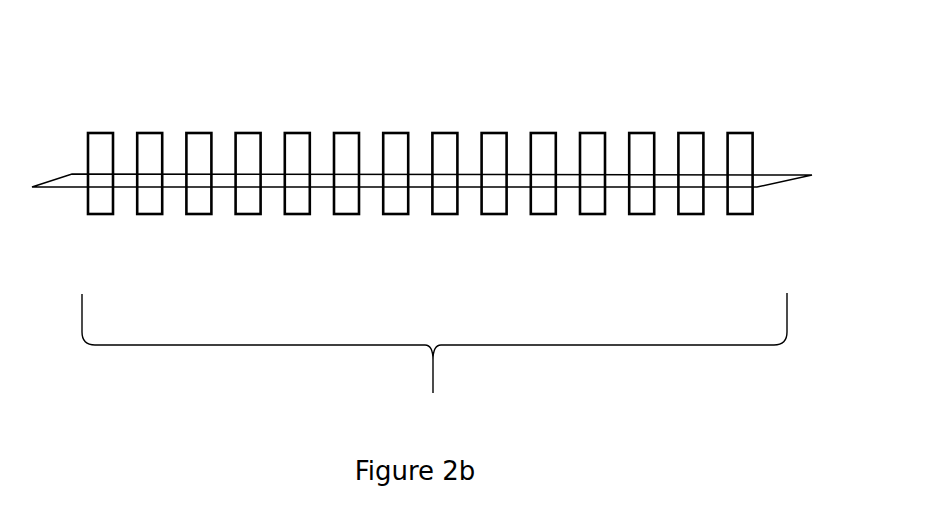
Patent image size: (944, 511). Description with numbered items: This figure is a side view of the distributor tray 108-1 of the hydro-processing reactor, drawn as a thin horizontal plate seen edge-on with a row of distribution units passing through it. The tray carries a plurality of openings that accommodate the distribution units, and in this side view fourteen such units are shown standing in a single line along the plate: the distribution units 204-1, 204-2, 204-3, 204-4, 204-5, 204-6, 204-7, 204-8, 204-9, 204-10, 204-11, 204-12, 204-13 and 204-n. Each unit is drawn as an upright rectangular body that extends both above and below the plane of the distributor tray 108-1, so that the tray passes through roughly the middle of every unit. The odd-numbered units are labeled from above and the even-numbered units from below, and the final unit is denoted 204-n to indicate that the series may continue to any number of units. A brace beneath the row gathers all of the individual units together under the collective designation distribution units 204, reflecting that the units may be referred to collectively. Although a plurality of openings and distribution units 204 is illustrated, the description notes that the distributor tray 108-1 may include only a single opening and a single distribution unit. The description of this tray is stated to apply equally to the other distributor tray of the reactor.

The distributor tray 108-1 is at (801, 173).
The distribution units 204 is at (434, 359).
The distribution unit 204-1 is at (101, 132).
The distribution unit 204-2 is at (152, 216).
The distribution unit 204-3 is at (200, 132).
The distribution unit 204-4 is at (250, 216).
The distribution unit 204-5 is at (298, 132).
The distribution unit 204-6 is at (348, 216).
The distribution unit 204-7 is at (396, 132).
The distribution unit 204-8 is at (447, 216).
The distribution unit 204-9 is at (494, 132).
The distribution unit 204-10 is at (545, 216).
The distribution unit 204-11 is at (592, 132).
The distribution unit 204-12 is at (644, 216).
The distribution unit 204-13 is at (692, 132).
The distribution unit 204-n is at (742, 216).